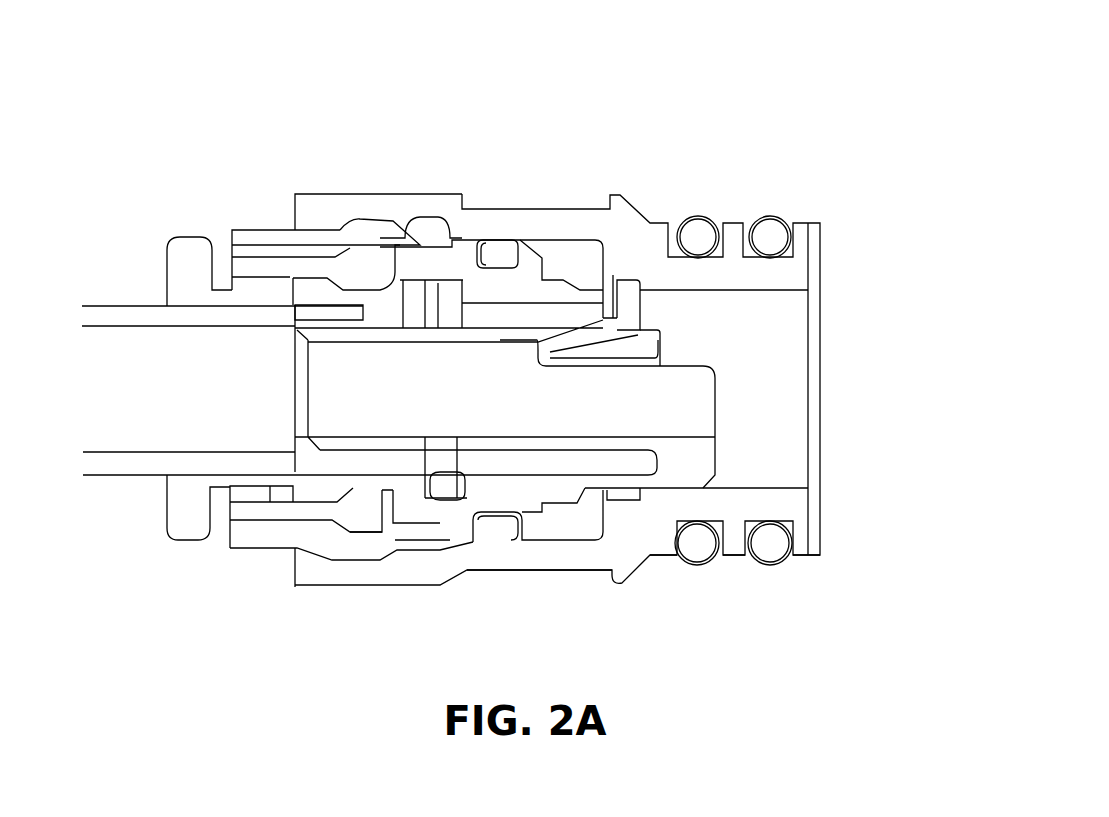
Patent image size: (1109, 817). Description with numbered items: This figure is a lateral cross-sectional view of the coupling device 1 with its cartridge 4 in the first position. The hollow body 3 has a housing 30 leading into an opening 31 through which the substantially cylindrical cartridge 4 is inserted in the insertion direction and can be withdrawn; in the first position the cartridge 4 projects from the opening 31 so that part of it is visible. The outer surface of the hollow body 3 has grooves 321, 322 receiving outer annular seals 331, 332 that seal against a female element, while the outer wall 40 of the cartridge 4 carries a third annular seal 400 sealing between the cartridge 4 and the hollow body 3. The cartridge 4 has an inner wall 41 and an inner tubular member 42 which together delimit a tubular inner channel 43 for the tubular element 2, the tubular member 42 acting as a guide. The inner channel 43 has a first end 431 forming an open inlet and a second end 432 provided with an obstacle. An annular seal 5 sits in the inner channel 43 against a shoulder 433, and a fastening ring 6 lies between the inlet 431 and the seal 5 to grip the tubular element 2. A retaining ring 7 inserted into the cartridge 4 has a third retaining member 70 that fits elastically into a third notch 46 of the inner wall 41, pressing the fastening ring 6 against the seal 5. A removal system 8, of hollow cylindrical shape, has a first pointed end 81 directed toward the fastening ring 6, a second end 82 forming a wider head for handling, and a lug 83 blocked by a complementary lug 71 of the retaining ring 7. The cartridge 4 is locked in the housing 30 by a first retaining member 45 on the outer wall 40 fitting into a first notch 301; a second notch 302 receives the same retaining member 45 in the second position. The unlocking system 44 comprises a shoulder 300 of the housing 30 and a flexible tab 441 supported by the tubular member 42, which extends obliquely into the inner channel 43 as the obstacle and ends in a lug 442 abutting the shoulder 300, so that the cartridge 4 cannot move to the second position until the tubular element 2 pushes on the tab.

The coupling device 1 is at (740, 130).
The tubular element 2 is at (100, 262).
The hollow body 3 is at (628, 555).
The cartridge 4 is at (533, 503).
The annular seal 5 is at (443, 290).
The fastening ring 6 is at (423, 215).
The retaining ring 7 is at (255, 515).
The removal system 8 is at (185, 232).
The housing 30 is at (571, 523).
The opening 31 is at (272, 560).
The outer wall 40 is at (258, 227).
The inner wall 41 is at (485, 300).
The tubular member 42 is at (483, 450).
The inner channel 43 is at (510, 313).
The unlocking system 44 is at (915, 380).
The first retaining member 45 is at (375, 227).
The third notch 46 is at (360, 263).
The third retaining member 70 is at (362, 243).
The complementary lug 71 is at (238, 495).
The first pointed end 81 is at (353, 485).
The second end 82 is at (172, 505).
The lug 83 is at (303, 493).
The shoulder 300 is at (645, 283).
The first notch 301 is at (363, 215).
The second notch 302 is at (407, 297).
The groove 321 is at (702, 259).
The groove 322 is at (781, 258).
The outer annular seal 331 is at (700, 237).
The outer annular seal 332 is at (775, 237).
The third annular seal 400 is at (502, 252).
The first end 431 is at (322, 315).
The second end 432 is at (547, 313).
The shoulder 433 is at (465, 295).
The flexible tab 441 is at (593, 343).
The lug 442 is at (638, 310).